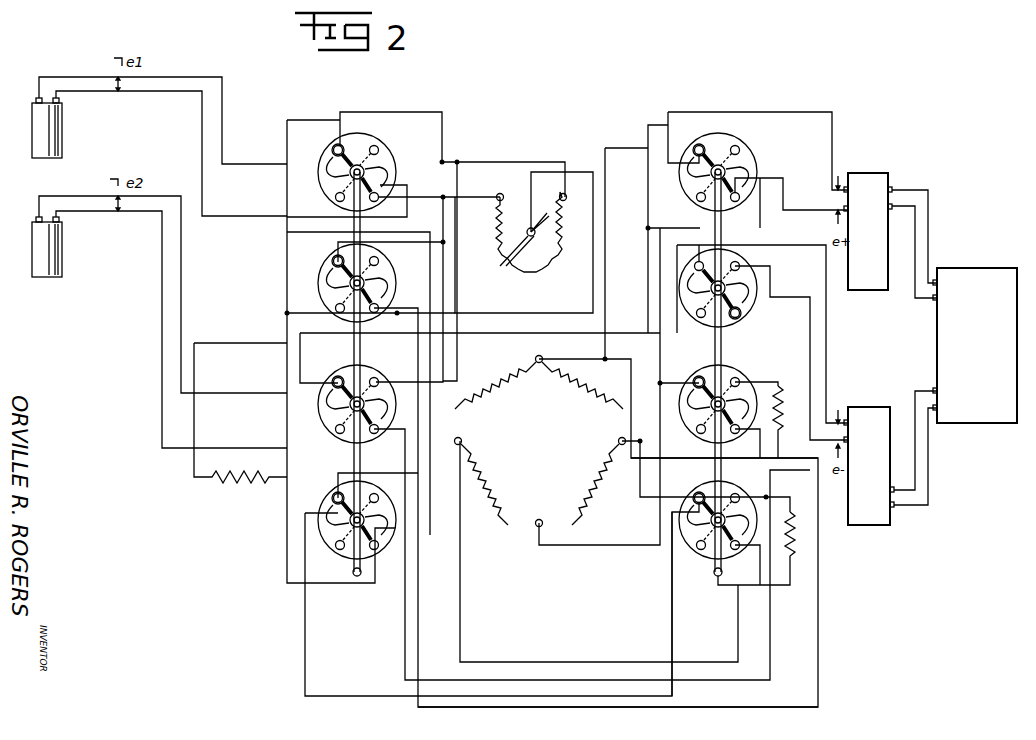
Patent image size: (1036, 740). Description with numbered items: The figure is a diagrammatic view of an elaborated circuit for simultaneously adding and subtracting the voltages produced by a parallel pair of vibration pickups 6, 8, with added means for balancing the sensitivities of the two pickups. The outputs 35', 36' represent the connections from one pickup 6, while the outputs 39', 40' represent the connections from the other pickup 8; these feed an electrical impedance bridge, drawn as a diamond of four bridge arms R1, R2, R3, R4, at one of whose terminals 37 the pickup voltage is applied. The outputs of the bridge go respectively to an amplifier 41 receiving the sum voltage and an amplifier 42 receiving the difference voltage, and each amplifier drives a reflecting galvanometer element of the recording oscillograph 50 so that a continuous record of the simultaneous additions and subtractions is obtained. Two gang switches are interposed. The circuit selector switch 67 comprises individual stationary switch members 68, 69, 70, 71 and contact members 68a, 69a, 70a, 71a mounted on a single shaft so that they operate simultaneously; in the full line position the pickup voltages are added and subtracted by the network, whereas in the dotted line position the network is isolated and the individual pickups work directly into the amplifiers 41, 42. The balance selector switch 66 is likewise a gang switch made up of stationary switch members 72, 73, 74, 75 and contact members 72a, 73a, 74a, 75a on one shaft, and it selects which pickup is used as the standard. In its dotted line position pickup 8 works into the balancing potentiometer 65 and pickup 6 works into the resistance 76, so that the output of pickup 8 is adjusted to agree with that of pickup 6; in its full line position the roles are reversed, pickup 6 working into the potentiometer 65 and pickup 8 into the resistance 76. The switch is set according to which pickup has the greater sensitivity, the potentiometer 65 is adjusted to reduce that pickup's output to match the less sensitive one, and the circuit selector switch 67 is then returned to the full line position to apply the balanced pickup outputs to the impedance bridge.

The vibration pickup 6 is at (32, 134).
The vibration pickup 8 is at (32, 249).
The output connection 35' is at (163, 105).
The output connection 36' is at (171, 153).
The output connection 39' is at (163, 294).
The output connection 40' is at (171, 329).
The bridge terminal 37 is at (540, 442).
The amplifier 41 is at (872, 174).
The amplifier 42 is at (870, 526).
The recording oscillograph 50 is at (1010, 262).
The balancing potentiometer 65 is at (563, 245).
The balance selector switch 66 is at (354, 578).
The circuit selector switch 67 is at (712, 576).
The stationary switch member 68 is at (704, 486).
The contact member 68a is at (699, 498).
The stationary switch member 69 is at (707, 370).
The contact member 69a is at (699, 382).
The stationary switch member 70 is at (689, 314).
The contact member 70a is at (735, 313).
The stationary switch member 71 is at (706, 146).
The contact member 71a is at (699, 150).
The stationary switch member 72 is at (338, 494).
The contact member 72a is at (338, 498).
The stationary switch member 73 is at (340, 380).
The contact member 73a is at (338, 382).
The stationary switch member 74 is at (338, 256).
The contact member 74a is at (338, 261).
The stationary switch member 75 is at (338, 146).
The contact member 75a is at (338, 150).
The resistance 76 is at (222, 474).
The bridge resistor R1 is at (582, 385).
The bridge resistor R2 is at (592, 478).
The bridge resistor R3 is at (496, 498).
The bridge resistor R4 is at (495, 385).